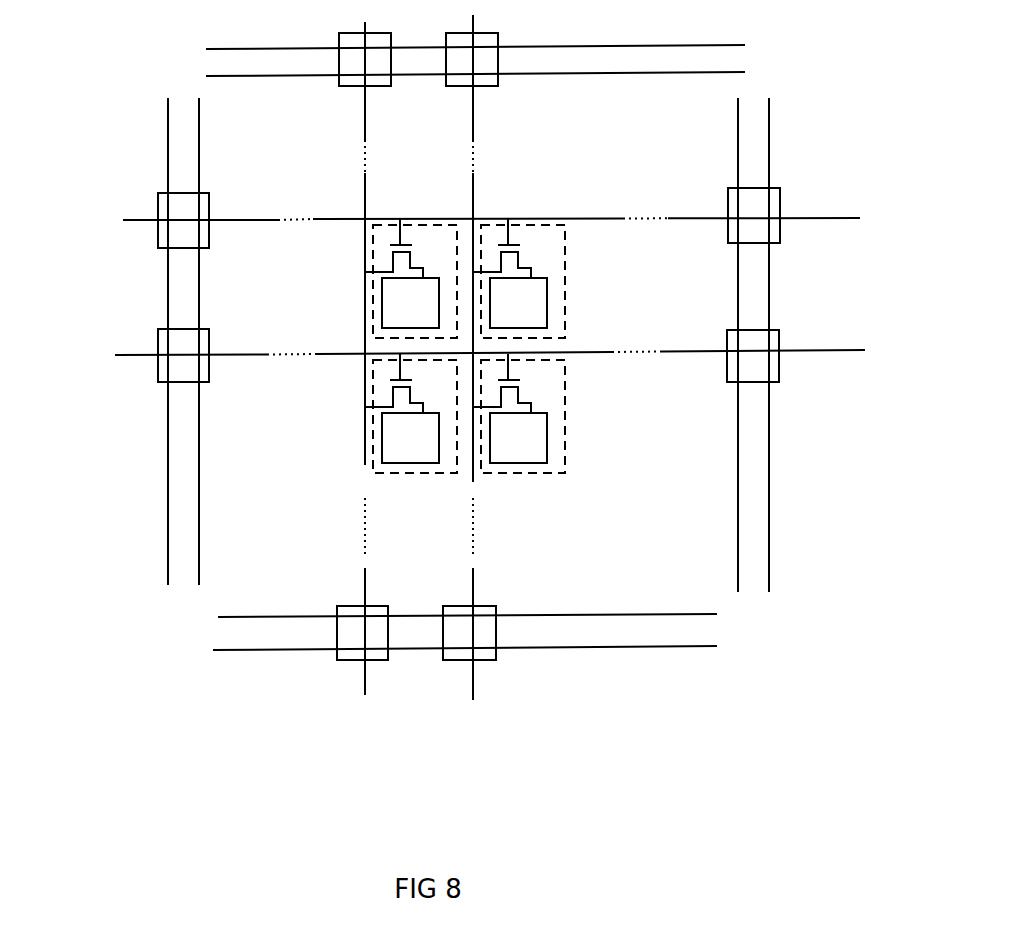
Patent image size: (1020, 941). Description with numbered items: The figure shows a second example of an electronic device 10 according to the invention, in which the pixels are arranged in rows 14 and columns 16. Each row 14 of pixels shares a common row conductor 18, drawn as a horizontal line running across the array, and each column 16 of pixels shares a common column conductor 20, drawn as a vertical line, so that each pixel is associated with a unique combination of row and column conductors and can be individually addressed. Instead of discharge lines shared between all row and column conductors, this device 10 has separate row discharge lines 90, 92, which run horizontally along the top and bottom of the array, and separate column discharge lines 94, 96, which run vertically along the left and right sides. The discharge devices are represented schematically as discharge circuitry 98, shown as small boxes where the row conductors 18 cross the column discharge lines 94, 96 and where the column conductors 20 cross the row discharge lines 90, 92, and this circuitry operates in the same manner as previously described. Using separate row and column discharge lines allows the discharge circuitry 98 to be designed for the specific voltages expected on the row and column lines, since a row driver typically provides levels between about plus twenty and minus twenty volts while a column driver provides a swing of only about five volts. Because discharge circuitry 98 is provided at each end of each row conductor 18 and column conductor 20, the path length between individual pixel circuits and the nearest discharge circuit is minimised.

The electronic device 10 is at (818, 41).
The rows 14 is at (137, 287).
The columns 16 is at (431, 722).
The row conductor 18 is at (143, 220).
The column conductor 20 is at (365, 680).
The row discharge line 90 is at (642, 76).
The row discharge line 92 is at (722, 45).
The column discharge line 94 is at (199, 543).
The column discharge line 96 is at (168, 495).
The discharge circuitry 98 is at (339, 80).